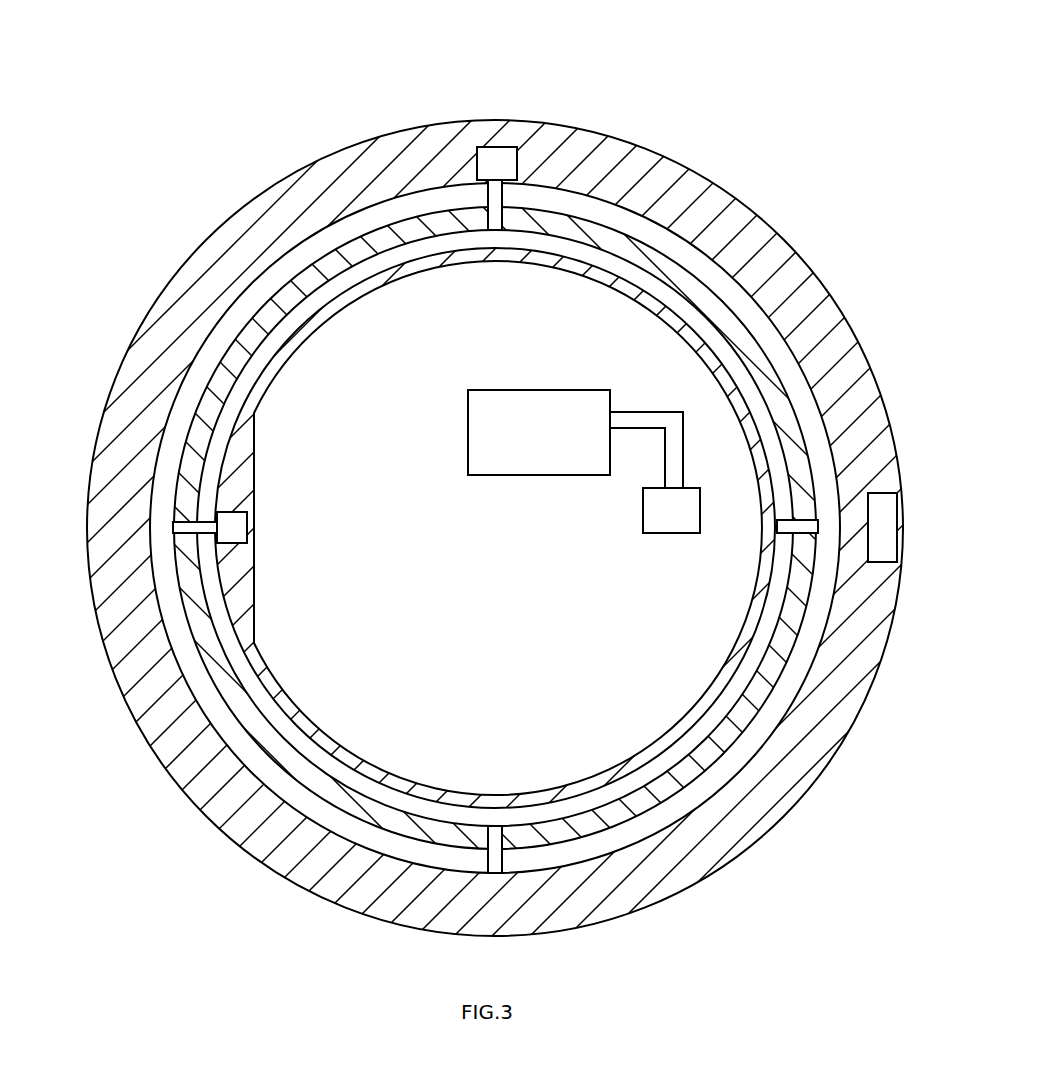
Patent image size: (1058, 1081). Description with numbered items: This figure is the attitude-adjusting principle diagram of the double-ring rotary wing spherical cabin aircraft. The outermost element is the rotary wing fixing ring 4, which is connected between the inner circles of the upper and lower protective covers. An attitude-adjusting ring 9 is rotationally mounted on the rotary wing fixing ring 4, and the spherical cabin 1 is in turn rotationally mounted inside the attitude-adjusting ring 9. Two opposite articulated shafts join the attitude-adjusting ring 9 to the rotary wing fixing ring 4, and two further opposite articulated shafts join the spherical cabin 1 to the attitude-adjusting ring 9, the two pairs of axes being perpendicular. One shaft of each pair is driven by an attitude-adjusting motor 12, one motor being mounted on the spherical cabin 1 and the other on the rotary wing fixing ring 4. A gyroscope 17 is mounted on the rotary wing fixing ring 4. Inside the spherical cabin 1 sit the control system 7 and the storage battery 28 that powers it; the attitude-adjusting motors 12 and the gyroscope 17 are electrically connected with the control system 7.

The rotary wing fixing ring 4 is at (350, 182).
The attitude-adjusting ring 9 is at (272, 312).
The spherical cabin 1 is at (697, 337).
The attitude-adjusting motor 12 is at (505, 163).
The gyroscope 17 is at (883, 518).
The control system 7 is at (548, 408).
The storage battery 28 is at (687, 508).